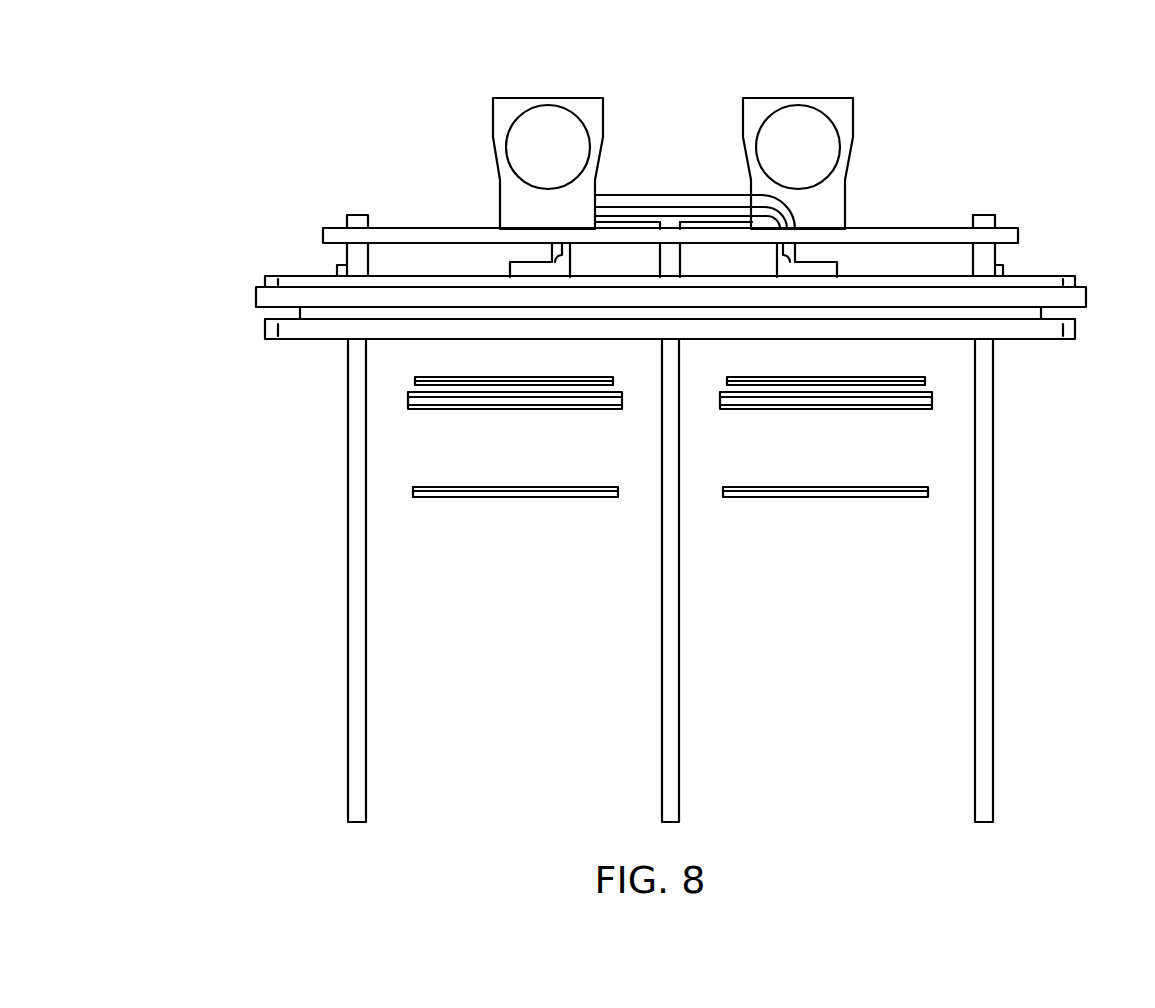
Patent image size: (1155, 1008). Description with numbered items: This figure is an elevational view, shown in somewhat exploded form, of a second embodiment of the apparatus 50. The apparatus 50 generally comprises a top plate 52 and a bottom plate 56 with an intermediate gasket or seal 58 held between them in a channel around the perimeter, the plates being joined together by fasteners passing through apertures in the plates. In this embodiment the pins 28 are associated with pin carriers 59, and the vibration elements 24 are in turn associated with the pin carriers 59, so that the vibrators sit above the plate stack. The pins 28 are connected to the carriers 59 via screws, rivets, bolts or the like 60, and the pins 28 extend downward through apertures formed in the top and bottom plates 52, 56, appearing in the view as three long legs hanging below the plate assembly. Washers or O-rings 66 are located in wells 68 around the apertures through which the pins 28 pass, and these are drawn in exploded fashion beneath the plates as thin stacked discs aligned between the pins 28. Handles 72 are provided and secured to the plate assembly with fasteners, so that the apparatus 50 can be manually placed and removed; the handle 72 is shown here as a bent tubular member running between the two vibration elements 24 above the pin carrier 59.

The vibration element 24 is at (552, 97).
The pin 28 is at (348, 613).
The apparatus 50 is at (653, 309).
The top plate 52 is at (1053, 276).
The bottom plate 56 is at (1043, 340).
The gasket or seal 58 is at (238, 301).
The pin carrier 59 is at (897, 228).
The screws, rivets or bolts 60 is at (362, 215).
The washers or O-rings 66 is at (518, 497).
The wells 68 is at (518, 409).
The handle 72 is at (653, 195).